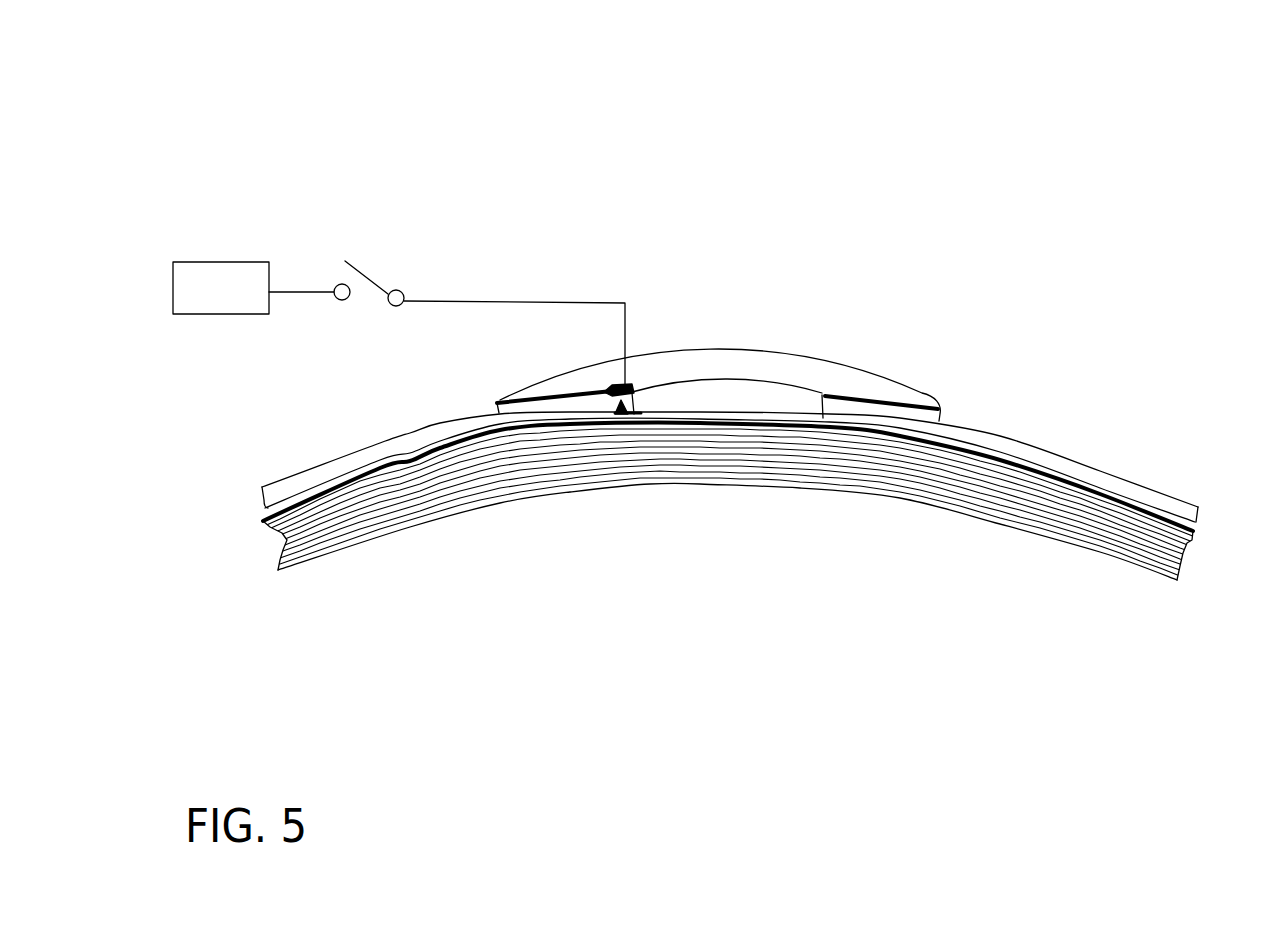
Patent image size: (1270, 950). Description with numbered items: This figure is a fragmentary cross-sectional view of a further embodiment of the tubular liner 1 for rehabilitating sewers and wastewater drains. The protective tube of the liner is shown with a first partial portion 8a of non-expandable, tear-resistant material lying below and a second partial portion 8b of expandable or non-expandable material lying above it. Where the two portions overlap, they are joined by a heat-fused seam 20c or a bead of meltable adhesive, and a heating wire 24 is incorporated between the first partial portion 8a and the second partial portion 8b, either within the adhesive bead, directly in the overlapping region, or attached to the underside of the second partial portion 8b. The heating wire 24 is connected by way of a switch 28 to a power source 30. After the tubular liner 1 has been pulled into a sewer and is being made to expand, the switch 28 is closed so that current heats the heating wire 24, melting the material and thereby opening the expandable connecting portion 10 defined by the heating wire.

The tubular liner 1 is at (960, 170).
The first partial portion 8a is at (293, 485).
The second partial portion 8b is at (733, 363).
The connecting portion 10 is at (627, 416).
The heat-fused seam 20c is at (567, 397).
The heating wire 24 is at (630, 388).
The switch 28 is at (366, 262).
The power source 30 is at (221, 285).